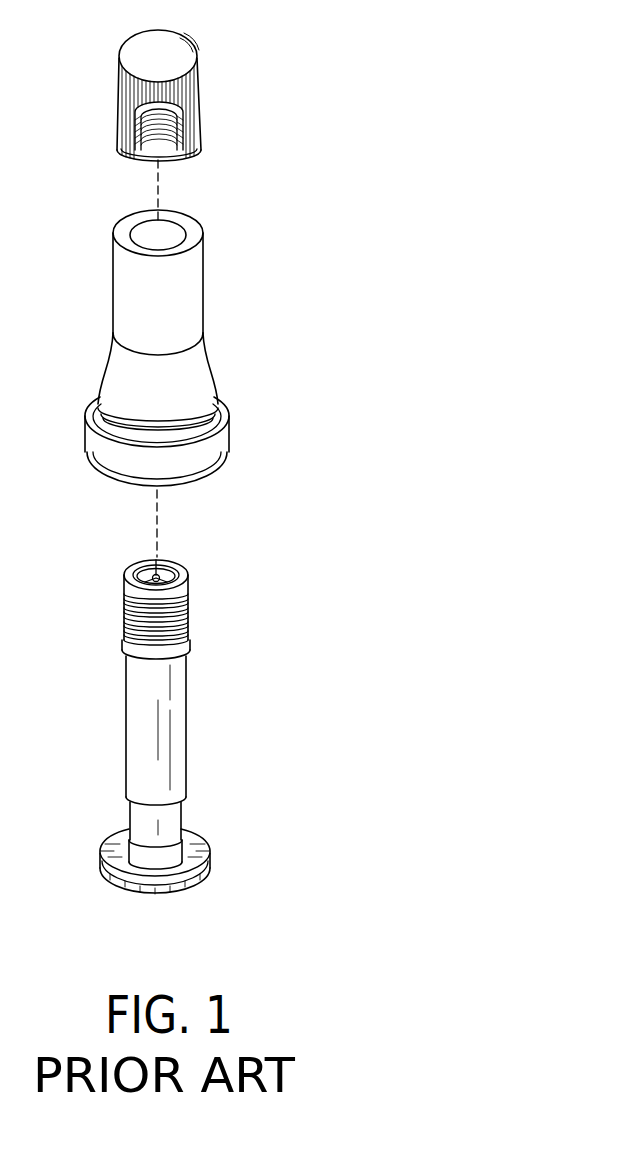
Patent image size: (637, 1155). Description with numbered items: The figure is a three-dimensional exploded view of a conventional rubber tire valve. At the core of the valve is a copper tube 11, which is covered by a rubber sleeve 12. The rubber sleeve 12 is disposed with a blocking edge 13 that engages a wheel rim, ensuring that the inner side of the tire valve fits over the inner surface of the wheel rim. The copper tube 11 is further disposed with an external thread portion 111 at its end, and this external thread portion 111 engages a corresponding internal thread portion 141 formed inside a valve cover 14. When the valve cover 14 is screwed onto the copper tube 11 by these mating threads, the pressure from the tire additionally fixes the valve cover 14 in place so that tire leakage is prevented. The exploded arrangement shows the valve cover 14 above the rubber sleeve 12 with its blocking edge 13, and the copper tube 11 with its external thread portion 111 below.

The copper tube 11 is at (213, 722).
The external thread portion 111 is at (190, 612).
The rubber sleeve 12 is at (217, 337).
The blocking edge 13 is at (190, 417).
The valve cover 14 is at (212, 117).
The internal thread portion 141 is at (170, 140).